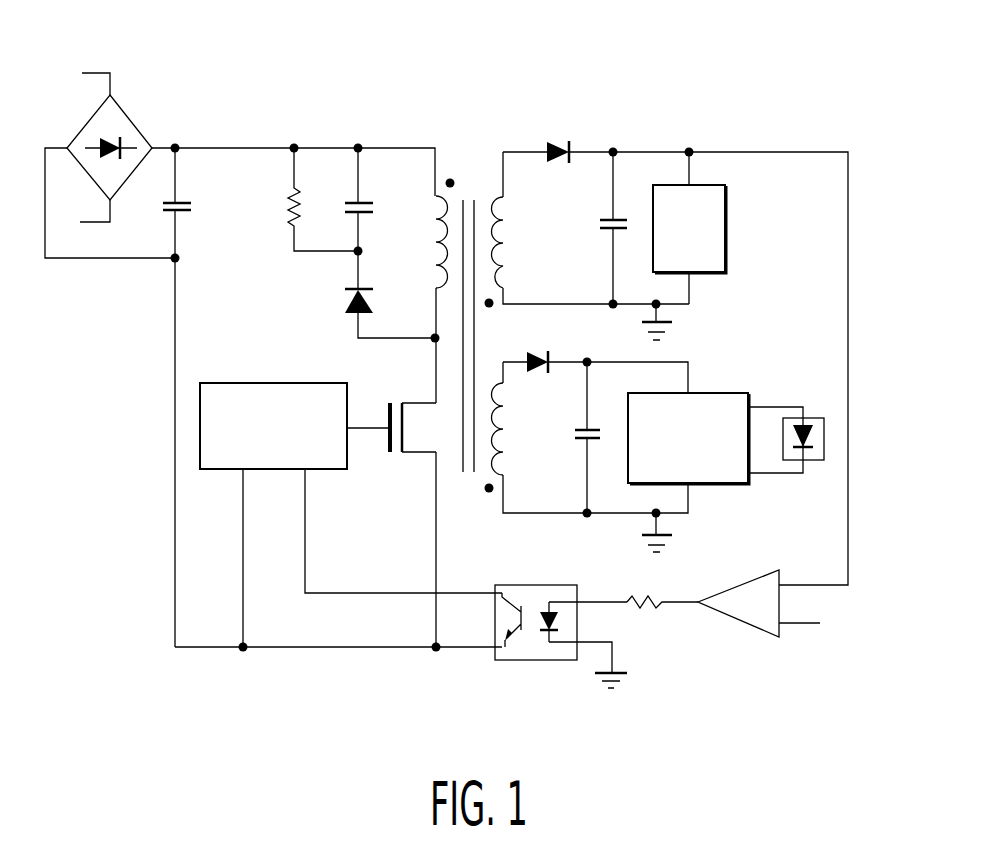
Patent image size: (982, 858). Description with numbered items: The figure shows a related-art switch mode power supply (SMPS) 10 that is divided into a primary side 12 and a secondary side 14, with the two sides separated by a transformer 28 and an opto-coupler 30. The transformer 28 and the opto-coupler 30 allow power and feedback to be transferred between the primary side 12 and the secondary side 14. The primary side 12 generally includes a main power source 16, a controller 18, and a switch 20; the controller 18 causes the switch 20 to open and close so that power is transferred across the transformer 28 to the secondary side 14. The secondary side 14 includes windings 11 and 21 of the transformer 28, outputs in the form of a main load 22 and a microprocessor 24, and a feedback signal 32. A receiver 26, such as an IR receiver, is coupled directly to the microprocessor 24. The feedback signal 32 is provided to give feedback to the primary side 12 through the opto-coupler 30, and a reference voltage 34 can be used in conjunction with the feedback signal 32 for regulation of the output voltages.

The switch mode power supply 10 is at (441, 84).
The winding 11 is at (522, 440).
The primary side 12 is at (294, 134).
The secondary side 14 is at (689, 136).
The main power source 16 is at (122, 112).
The controller 18 is at (243, 383).
The switch 20 is at (388, 416).
The winding 21 is at (522, 253).
The main load 22 is at (727, 218).
The microprocessor 24 is at (715, 393).
The receiver 26 is at (816, 462).
The transformer 28 is at (507, 298).
The opto-coupler 30 is at (527, 661).
The feedback signal 32 is at (850, 182).
The reference voltage 34 is at (848, 640).